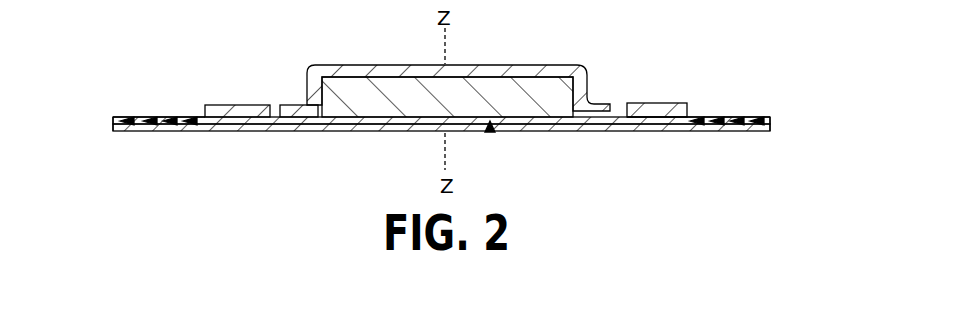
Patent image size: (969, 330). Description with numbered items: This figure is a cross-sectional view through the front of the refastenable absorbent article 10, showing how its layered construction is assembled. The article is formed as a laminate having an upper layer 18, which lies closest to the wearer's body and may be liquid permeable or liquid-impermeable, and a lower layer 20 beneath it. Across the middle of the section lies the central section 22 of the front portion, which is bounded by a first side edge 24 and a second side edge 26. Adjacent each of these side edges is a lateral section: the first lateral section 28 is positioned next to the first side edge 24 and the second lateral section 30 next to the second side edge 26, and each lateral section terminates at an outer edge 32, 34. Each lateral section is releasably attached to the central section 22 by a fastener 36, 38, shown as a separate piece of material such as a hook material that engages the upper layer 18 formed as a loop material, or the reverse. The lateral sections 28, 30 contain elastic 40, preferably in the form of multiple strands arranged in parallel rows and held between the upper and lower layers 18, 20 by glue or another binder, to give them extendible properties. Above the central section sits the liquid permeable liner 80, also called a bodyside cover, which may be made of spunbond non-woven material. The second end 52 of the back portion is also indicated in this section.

The refastenable absorbent article 10 is at (758, 46).
The upper layer 18 is at (537, 120).
The lower layer 20 is at (583, 130).
The central section 22 is at (490, 132).
The first side edge 24 is at (257, 113).
The second side edge 26 is at (647, 110).
The first lateral section 28 is at (142, 117).
The second lateral section 30 is at (721, 117).
The outer edge 32 is at (113, 121).
The outer edge 34 is at (770, 122).
The fastener 36 is at (237, 105).
The fastener 38 is at (642, 105).
The elastic 40 is at (172, 124).
The second end 52 is at (558, 83).
The liquid permeable liner 80 is at (517, 65).